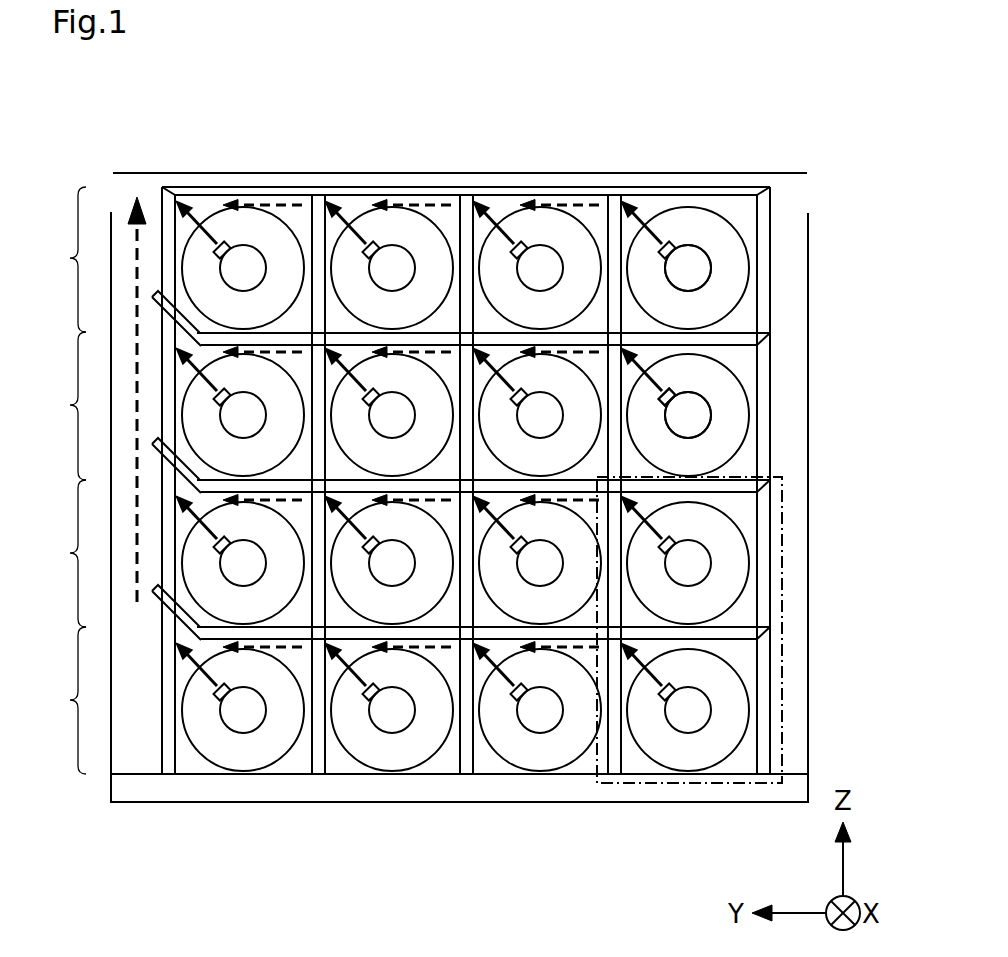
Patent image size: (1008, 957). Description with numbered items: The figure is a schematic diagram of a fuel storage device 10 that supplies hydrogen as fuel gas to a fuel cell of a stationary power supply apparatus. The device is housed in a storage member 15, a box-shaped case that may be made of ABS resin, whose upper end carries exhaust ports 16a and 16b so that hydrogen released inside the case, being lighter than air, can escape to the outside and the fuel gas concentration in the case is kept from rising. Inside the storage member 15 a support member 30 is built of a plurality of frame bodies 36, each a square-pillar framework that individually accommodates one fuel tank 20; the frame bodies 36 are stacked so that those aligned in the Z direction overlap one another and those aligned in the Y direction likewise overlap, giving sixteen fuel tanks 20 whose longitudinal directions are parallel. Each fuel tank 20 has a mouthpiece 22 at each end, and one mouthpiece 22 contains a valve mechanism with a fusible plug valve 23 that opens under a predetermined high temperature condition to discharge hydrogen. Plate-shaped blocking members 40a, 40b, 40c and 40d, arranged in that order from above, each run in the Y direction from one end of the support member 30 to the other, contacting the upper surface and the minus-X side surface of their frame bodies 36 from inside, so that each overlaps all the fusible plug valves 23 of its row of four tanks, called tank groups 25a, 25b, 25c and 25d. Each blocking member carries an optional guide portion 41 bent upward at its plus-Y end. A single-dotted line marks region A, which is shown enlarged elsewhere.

The fuel storage device 10 is at (805, 110).
The storage member 15 is at (809, 330).
The exhaust port 16a is at (113, 192).
The exhaust port 16b is at (812, 187).
The fuel tank 20 is at (688, 240).
The mouthpiece 22 is at (697, 283).
The fusible plug valve 23 is at (680, 392).
The tank group 25a is at (54, 259).
The tank group 25b is at (54, 406).
The tank group 25c is at (54, 553).
The tank group 25d is at (54, 700).
The support member 30 is at (712, 187).
The frame body 36 is at (772, 258).
The blocking member 40a is at (745, 203).
The blocking member 40b is at (745, 342).
The blocking member 40c is at (745, 494).
The blocking member 40d is at (745, 641).
The guide portion 41 is at (150, 299).
The region A is at (783, 622).